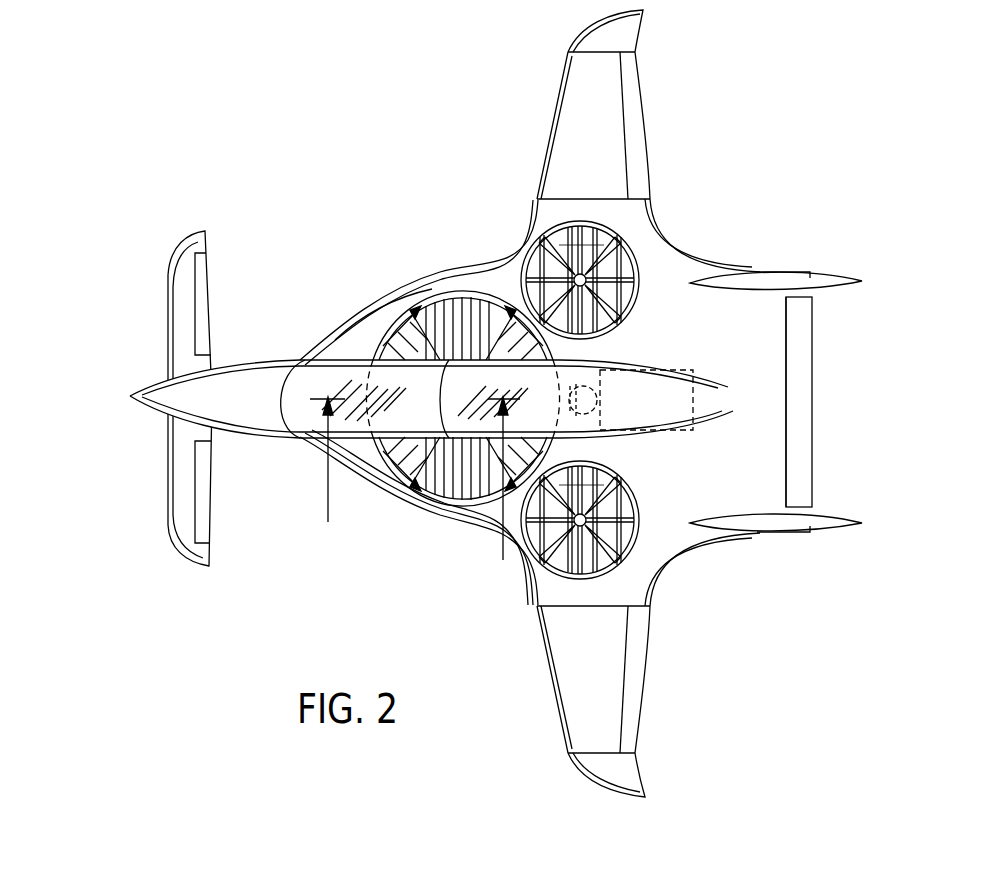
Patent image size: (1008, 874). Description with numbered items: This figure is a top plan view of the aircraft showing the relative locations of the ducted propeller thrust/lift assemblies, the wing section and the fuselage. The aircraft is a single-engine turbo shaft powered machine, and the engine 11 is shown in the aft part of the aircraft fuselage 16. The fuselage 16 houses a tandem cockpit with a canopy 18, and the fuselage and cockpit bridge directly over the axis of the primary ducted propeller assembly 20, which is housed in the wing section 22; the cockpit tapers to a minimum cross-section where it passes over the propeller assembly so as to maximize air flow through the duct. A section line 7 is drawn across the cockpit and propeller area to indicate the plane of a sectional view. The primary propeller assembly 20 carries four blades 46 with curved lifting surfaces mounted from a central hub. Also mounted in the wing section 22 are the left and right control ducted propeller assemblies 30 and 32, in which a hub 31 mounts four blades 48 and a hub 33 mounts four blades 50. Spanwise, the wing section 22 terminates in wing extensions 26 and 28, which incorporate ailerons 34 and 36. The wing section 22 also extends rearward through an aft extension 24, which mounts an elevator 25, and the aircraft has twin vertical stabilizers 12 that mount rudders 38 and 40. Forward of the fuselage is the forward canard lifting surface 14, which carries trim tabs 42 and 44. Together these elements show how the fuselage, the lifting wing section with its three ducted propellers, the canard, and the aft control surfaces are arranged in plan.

The section line 7- 7 is at (415, 492).
The engine 11 is at (626, 372).
The vertical stabilizers 12 is at (757, 274).
The forward canard lifting surface 14 is at (178, 310).
The aircraft fuselage 16 is at (251, 367).
The canopy 18 is at (306, 427).
The primary ducted propeller assembly 20 is at (409, 496).
The wing section 22 is at (363, 312).
The aft extension 24 is at (743, 353).
The elevator 25 is at (804, 408).
The wing extension 26 is at (568, 685).
The wing extension 28 is at (572, 80).
The control ducted propeller assembly 30 is at (645, 532).
The hub 31 is at (622, 511).
The control ducted propeller assembly 32 is at (643, 259).
The hub 33 is at (632, 296).
The aileron 34 is at (636, 703).
The aileron 36 is at (632, 87).
The rudder 38 is at (848, 524).
The rudder 40 is at (847, 277).
The trim tab 42 is at (208, 481).
The trim tab 44 is at (201, 301).
The blades 46 is at (517, 333).
The blades 48 is at (617, 486).
The blades 50 is at (610, 247).